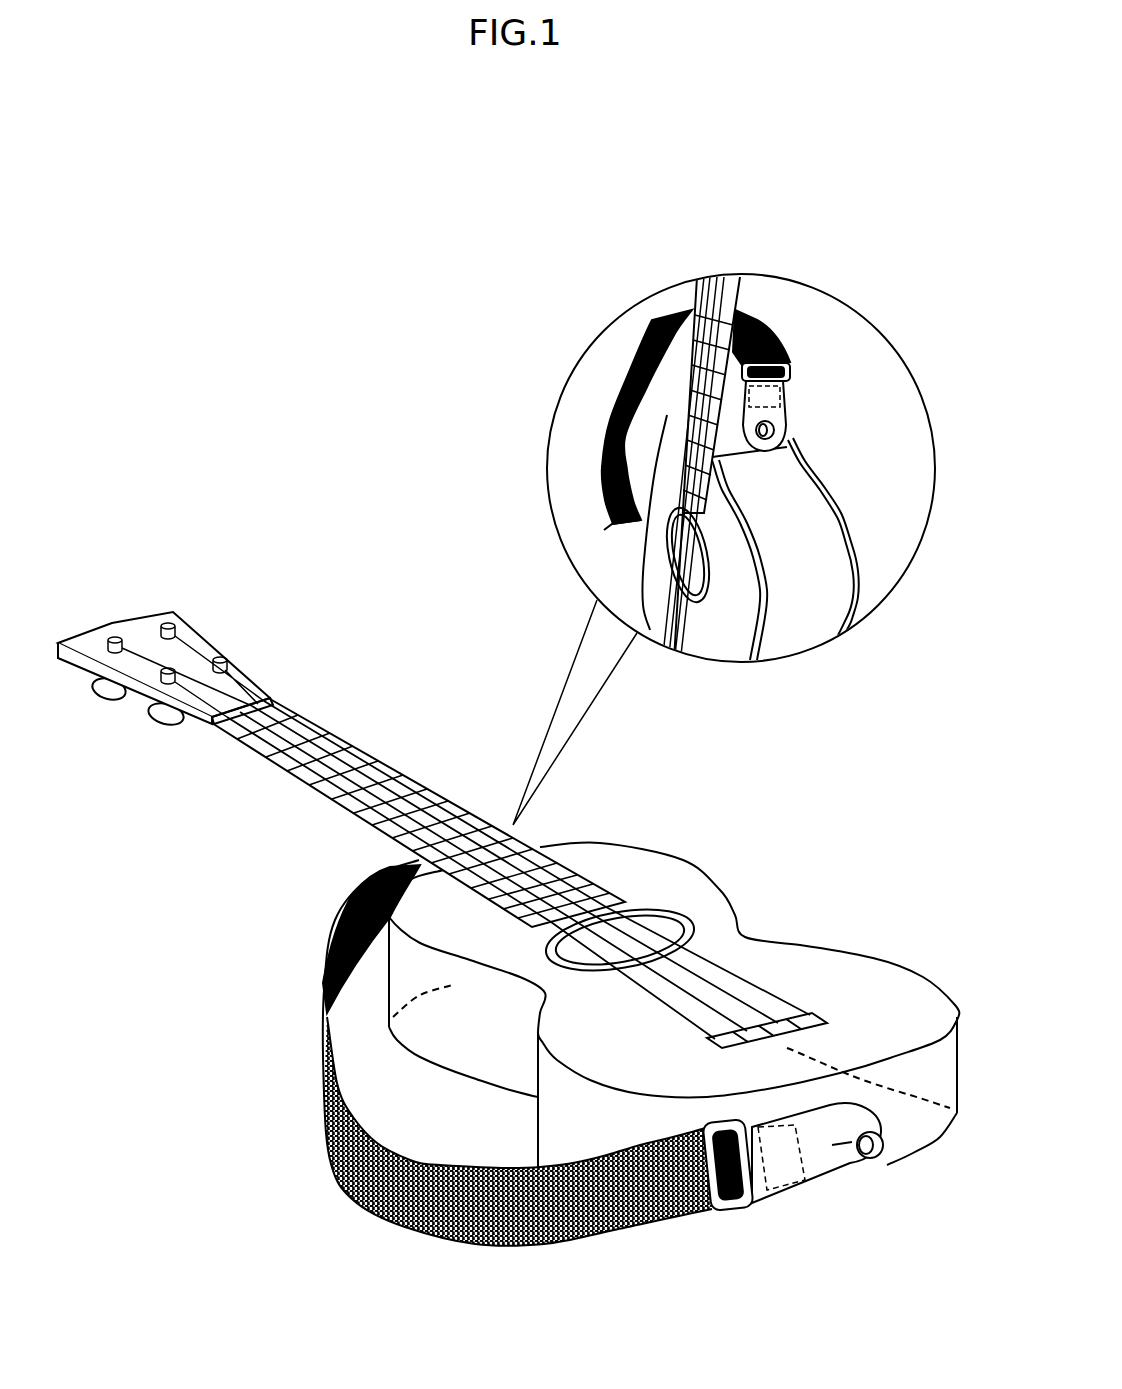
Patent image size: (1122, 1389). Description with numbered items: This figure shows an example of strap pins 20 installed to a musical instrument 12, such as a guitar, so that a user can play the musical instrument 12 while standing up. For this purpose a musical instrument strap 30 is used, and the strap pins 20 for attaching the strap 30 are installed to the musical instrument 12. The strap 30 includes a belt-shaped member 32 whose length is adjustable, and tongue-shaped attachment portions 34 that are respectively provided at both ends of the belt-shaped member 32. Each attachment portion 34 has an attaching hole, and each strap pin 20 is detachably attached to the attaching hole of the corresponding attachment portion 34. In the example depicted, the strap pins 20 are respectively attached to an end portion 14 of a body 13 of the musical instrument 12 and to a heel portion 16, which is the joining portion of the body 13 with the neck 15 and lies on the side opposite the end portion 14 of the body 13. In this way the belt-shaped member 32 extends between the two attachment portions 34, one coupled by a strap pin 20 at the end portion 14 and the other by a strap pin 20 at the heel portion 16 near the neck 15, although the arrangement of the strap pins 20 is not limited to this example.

The musical instrument 12 is at (740, 800).
The body 13 is at (758, 947).
The end portion 14 is at (913, 1130).
The neck 15 is at (412, 746).
The heel portion 16 is at (537, 846).
The strap pin 20 is at (880, 1157).
The musical instrument strap 30 is at (412, 1241).
The belt-shaped member 32 is at (600, 1216).
The attachment portion 34 is at (830, 1170).